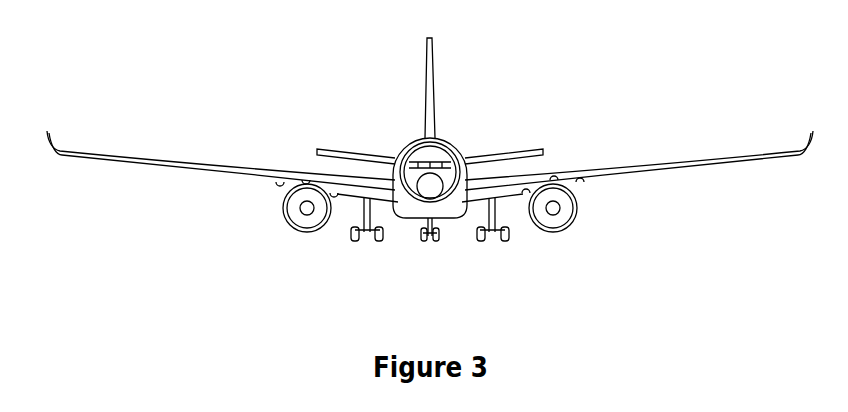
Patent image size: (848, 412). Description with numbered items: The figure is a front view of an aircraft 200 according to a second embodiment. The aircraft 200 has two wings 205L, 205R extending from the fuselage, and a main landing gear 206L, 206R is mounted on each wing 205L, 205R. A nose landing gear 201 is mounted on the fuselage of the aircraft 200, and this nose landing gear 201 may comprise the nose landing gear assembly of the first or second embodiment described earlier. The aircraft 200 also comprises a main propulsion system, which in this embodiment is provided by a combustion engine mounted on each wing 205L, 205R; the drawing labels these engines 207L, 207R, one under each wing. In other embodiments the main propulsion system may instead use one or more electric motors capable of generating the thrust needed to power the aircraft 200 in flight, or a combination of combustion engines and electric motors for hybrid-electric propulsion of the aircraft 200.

The aircraft 200 is at (430, 171).
The nose landing gear 201 is at (443, 242).
The wing 205R is at (207, 165).
The wing 205L is at (648, 165).
The main landing gear 206R is at (348, 243).
The main landing gear 206L is at (512, 238).
The right engine 207R is at (283, 208).
The left engine 207L is at (577, 210).